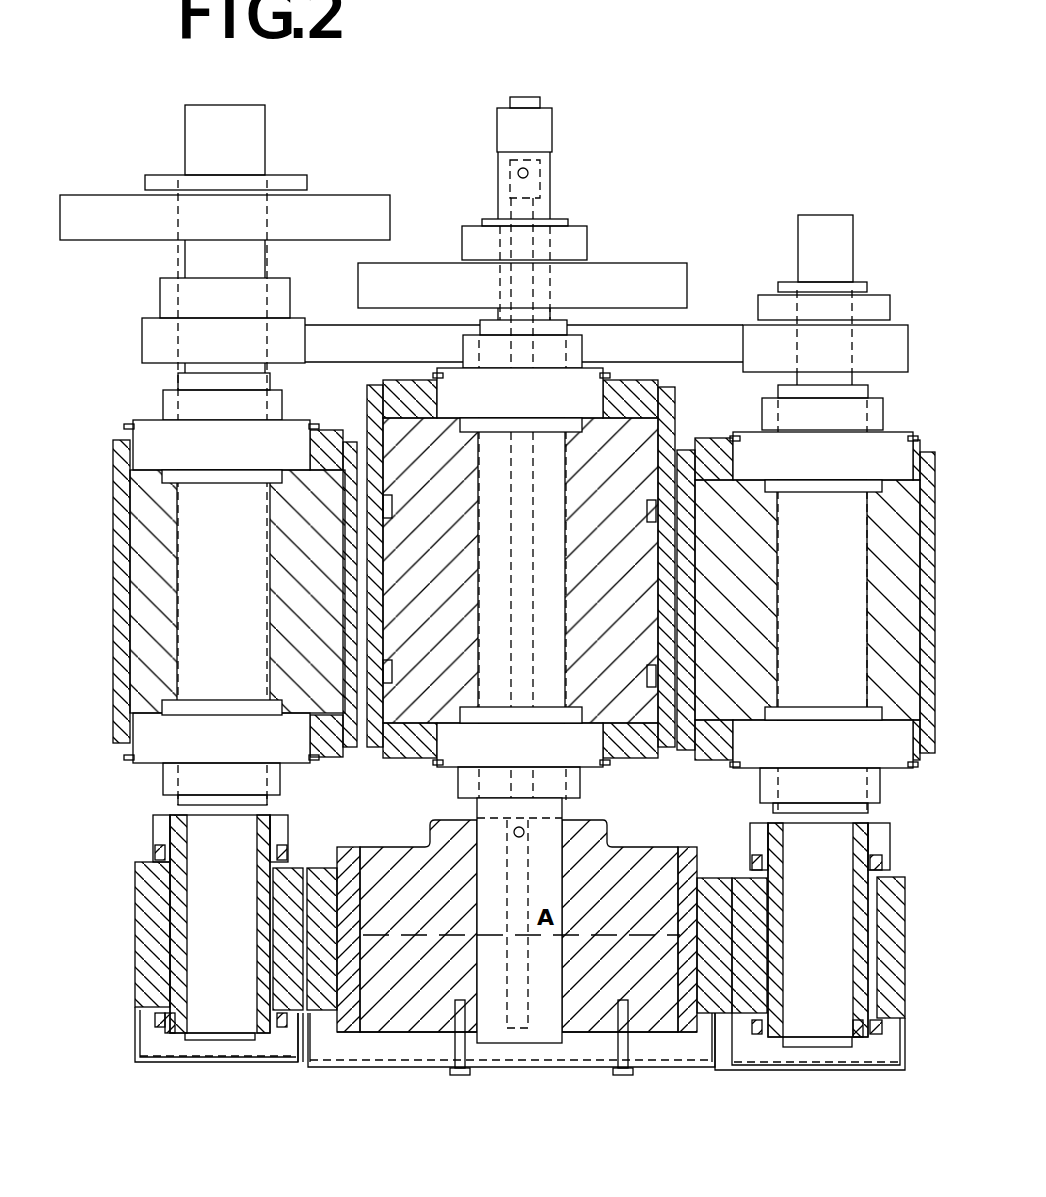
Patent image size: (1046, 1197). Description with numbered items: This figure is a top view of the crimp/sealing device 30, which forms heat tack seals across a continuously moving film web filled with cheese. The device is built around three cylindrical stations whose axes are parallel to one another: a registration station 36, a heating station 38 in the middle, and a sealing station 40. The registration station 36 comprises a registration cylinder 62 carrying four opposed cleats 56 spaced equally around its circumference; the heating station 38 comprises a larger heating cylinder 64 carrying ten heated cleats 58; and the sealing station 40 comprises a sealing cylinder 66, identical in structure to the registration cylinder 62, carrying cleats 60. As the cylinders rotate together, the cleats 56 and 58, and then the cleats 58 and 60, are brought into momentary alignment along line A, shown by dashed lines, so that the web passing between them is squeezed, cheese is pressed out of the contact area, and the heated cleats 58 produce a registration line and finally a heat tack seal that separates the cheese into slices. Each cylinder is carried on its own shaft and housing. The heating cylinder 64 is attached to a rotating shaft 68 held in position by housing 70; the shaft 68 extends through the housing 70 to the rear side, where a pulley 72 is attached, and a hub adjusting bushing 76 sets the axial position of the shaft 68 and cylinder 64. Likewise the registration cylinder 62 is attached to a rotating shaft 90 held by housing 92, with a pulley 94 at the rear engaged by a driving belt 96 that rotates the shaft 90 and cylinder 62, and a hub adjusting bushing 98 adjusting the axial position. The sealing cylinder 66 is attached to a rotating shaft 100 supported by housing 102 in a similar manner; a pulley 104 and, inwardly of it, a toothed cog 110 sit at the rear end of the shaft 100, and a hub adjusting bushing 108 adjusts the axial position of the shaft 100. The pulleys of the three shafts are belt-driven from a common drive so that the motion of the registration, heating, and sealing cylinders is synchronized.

The crimp/sealing device 30 is at (547, 1135).
The registration station 36 is at (890, 772).
The heating station 38 is at (580, 790).
The sealing station 40 is at (133, 766).
The cleats 56 is at (745, 878).
The cleats 58 is at (310, 868).
The cleats 60 is at (135, 885).
The registration cylinder 62 is at (855, 1028).
The heating cylinder 64 is at (583, 1018).
The sealing cylinder 66 is at (172, 1035).
The rotating shaft 68 is at (490, 885).
The housing 70 is at (623, 595).
The pulley 72 is at (663, 299).
The hub adjusting bushing 76 is at (567, 247).
The rotating shaft 90 is at (835, 929).
The housing 92 is at (903, 595).
The pulley 94 is at (898, 354).
The driving belt 96 is at (712, 359).
The hub adjusting bushing 98 is at (872, 305).
The rotating shaft 100 is at (240, 924).
The housing 102 is at (327, 593).
The pulley 104 is at (352, 230).
The hub adjusting bushing 108 is at (240, 309).
The cog 110 is at (246, 352).